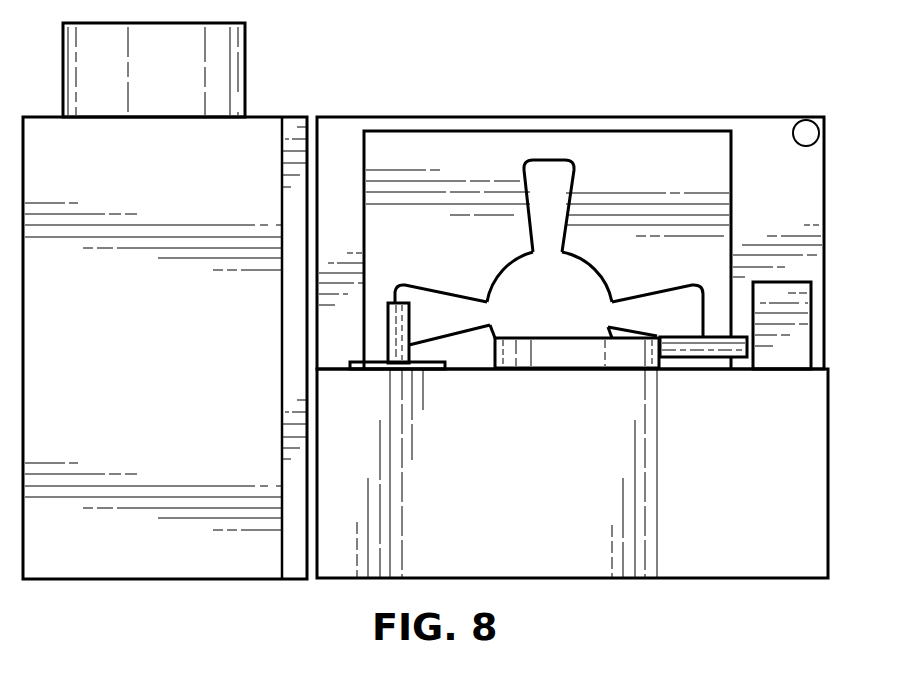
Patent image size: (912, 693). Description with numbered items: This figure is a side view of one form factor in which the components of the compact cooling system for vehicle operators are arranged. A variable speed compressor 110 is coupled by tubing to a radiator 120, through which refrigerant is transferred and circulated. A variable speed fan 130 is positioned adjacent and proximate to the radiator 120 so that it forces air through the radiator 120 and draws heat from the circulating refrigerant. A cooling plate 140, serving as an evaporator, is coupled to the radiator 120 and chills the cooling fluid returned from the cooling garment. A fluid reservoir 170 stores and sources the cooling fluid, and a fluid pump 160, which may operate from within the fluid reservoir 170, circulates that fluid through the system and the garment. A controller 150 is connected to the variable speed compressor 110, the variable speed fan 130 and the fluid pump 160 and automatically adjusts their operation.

The variable speed compressor 110 is at (552, 352).
The radiator 120 is at (648, 117).
The variable speed fan 130 is at (548, 133).
The cooling plate 140 is at (543, 578).
The controller 150 is at (786, 282).
The fluid pump 160 is at (280, 398).
The fluid reservoir 170 is at (253, 116).